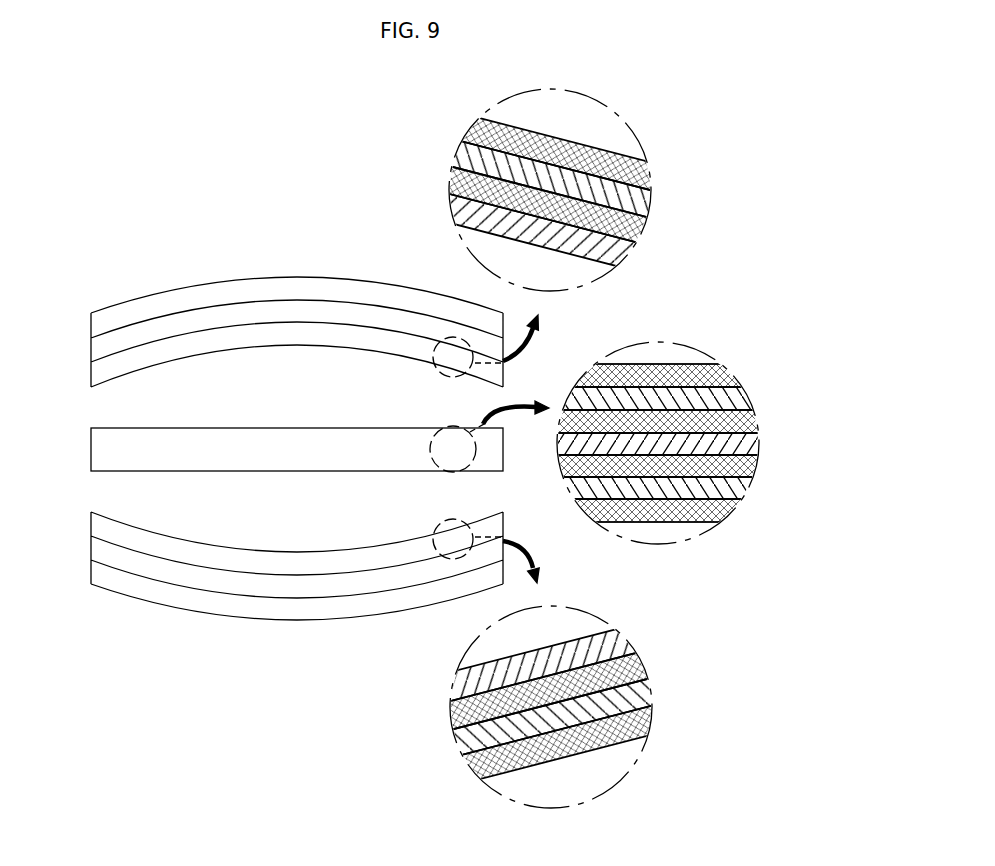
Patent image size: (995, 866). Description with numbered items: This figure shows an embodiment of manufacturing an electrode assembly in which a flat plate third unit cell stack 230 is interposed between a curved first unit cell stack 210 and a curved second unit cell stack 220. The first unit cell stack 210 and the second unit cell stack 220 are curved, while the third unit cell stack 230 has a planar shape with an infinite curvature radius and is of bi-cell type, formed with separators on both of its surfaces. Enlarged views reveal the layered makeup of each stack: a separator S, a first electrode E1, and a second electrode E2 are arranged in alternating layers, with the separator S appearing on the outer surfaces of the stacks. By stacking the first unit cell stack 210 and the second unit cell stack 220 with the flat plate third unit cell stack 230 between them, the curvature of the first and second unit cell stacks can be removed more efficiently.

The unit cell stack 210 is at (157, 616).
The unit cell stack 220 is at (156, 278).
The unit cell stack 230 is at (84, 441).
The separator S is at (641, 180).
The first electrode E1 is at (641, 207).
The second electrode E2 is at (623, 258).